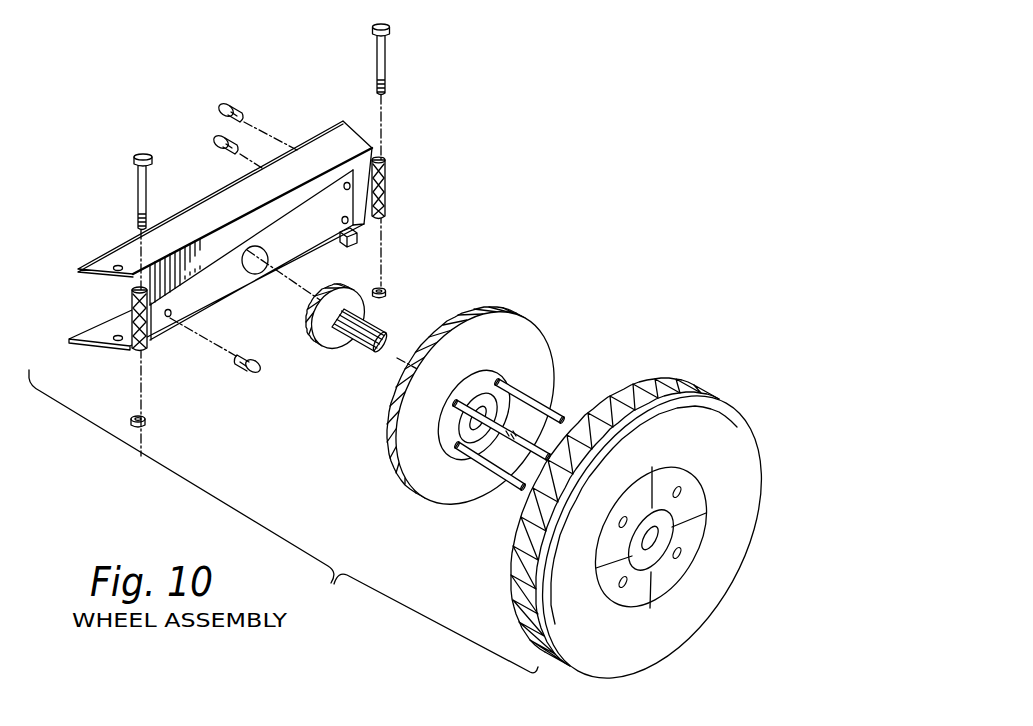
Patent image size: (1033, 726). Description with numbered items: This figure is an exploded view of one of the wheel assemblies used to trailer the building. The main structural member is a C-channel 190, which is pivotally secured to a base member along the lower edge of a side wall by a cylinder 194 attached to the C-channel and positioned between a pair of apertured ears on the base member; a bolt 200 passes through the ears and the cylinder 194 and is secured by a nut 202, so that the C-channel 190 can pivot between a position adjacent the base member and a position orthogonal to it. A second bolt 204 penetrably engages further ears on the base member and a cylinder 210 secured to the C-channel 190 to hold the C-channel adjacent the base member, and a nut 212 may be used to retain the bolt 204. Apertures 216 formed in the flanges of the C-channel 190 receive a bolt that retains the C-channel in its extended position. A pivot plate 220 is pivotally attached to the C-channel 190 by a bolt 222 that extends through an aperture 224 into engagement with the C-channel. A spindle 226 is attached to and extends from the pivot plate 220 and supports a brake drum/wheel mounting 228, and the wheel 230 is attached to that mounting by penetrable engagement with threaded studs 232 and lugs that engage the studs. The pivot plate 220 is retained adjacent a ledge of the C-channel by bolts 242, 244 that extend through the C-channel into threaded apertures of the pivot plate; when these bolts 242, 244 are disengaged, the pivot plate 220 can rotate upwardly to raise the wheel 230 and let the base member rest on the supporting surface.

The C-channel 190 is at (202, 241).
The cylinder 194 is at (147, 352).
The bolt 200 is at (136, 190).
The nut 202 is at (148, 422).
The bolt 204 is at (388, 70).
The cylinder 210 is at (390, 182).
The nut 212 is at (386, 291).
The apertures 216 is at (116, 337).
The pivot plate 220 is at (315, 212).
The bolt 222 is at (246, 376).
The aperture 224 is at (170, 320).
The spindle 226 is at (334, 349).
The brake drum/wheel mounting 228 is at (522, 318).
The wheel 230 is at (512, 560).
The threaded studs 232 is at (551, 406).
The bolt 242 is at (236, 104).
The bolt 244 is at (215, 137).